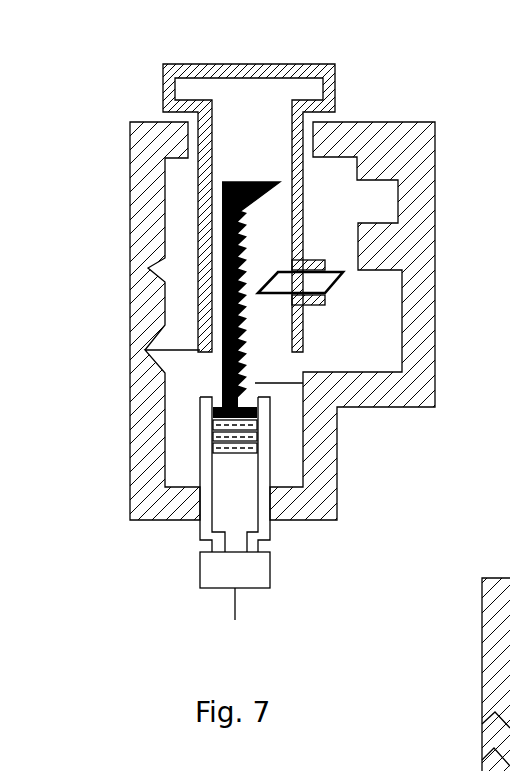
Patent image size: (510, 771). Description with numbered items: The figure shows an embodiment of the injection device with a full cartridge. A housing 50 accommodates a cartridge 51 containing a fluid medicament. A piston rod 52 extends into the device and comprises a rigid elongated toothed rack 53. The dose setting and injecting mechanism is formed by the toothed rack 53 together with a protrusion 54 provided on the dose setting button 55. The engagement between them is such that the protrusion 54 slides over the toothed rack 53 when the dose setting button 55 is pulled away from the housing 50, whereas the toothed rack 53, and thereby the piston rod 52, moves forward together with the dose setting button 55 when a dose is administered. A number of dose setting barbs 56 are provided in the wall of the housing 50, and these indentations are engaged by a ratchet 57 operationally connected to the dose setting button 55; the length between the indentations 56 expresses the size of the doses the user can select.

The housing 50 is at (413, 132).
The cartridge 51 is at (247, 523).
The piston rod 52 is at (222, 182).
The toothed rack 53 is at (247, 235).
The protrusion 54 is at (248, 358).
The dose setting button 55 is at (313, 65).
The dose setting barbs 56 is at (150, 275).
The ratchet 57 is at (180, 356).